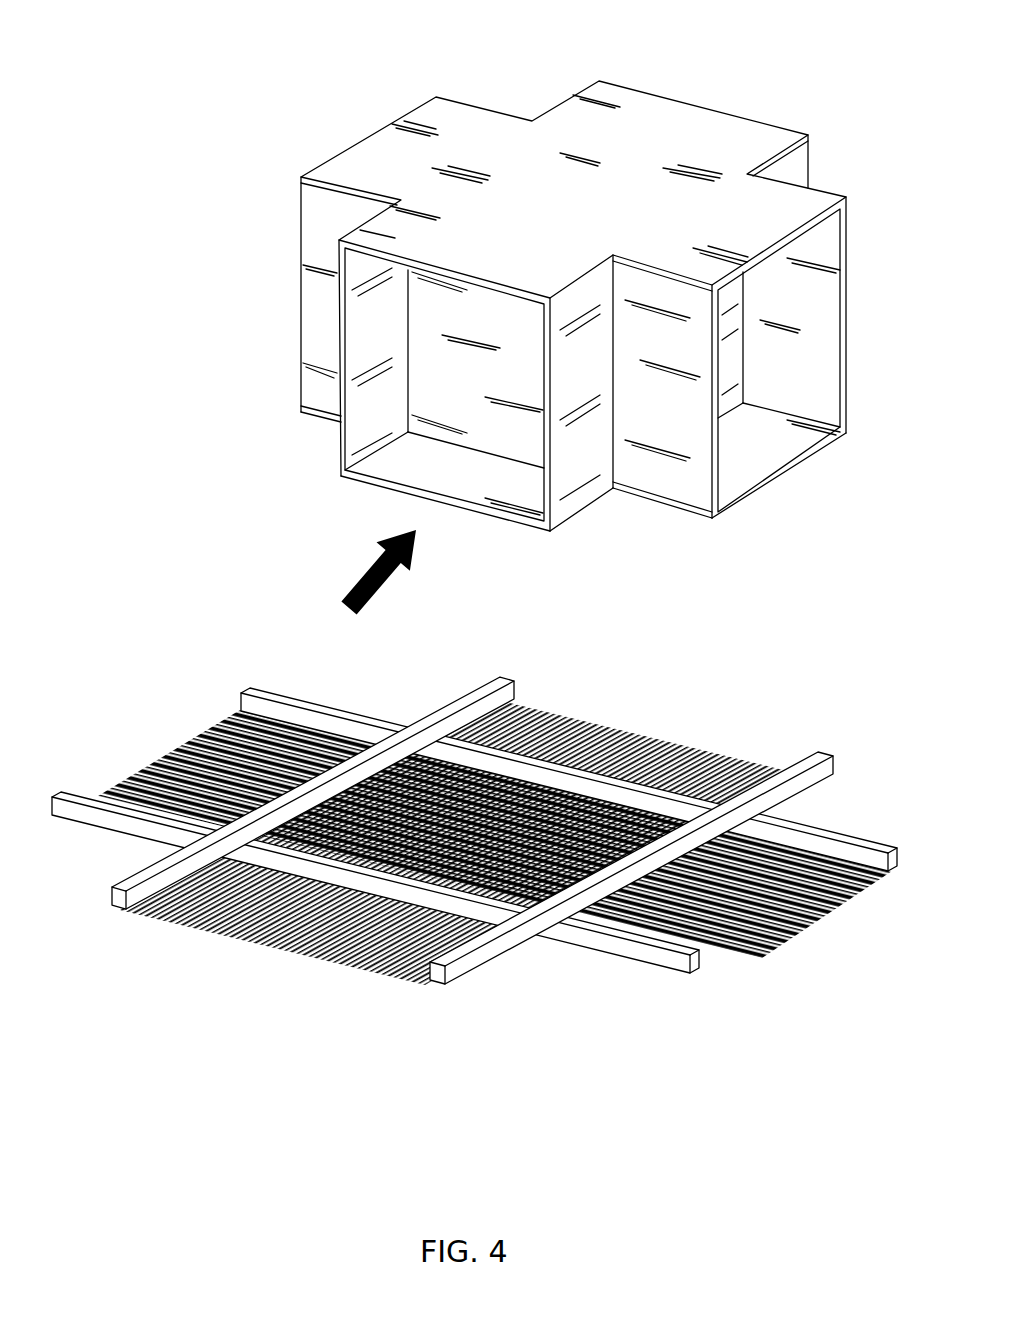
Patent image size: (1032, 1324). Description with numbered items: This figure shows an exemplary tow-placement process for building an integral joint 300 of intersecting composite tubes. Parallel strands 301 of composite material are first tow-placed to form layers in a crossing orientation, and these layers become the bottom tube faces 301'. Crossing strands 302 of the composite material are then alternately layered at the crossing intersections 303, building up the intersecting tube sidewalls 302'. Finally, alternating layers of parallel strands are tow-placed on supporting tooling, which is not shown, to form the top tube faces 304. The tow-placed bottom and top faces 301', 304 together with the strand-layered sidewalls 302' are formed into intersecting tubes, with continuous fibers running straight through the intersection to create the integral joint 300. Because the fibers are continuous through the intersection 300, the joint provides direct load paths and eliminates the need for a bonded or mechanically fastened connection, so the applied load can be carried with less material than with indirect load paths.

The integral joint 300 is at (258, 118).
The parallel strands 301 is at (495, 881).
The crossing strands 302 is at (477, 844).
The crossing intersections 303 is at (725, 800).
The top tube faces 304 is at (443, 115).
The bottom tube faces 301' is at (685, 407).
The intersecting tube sidewalls 302' is at (432, 354).